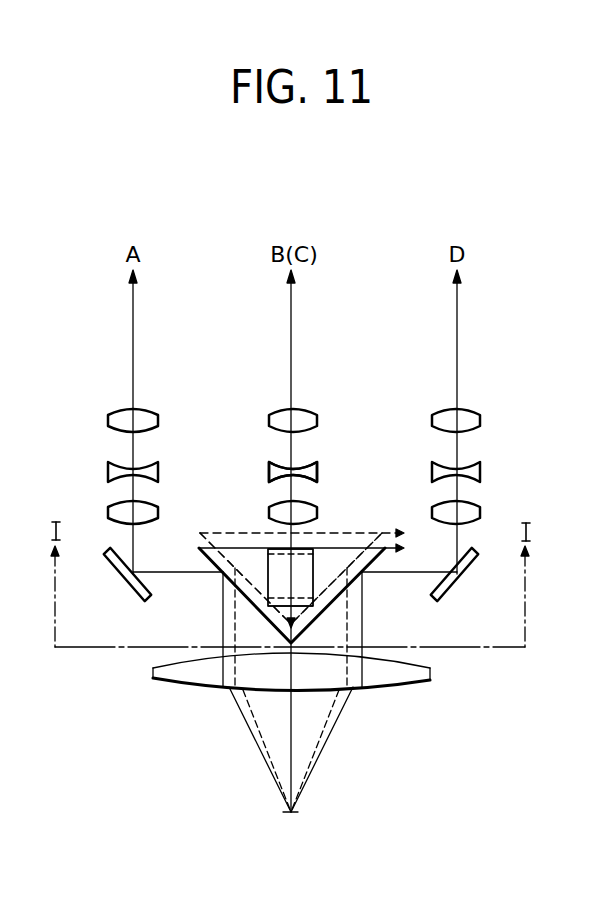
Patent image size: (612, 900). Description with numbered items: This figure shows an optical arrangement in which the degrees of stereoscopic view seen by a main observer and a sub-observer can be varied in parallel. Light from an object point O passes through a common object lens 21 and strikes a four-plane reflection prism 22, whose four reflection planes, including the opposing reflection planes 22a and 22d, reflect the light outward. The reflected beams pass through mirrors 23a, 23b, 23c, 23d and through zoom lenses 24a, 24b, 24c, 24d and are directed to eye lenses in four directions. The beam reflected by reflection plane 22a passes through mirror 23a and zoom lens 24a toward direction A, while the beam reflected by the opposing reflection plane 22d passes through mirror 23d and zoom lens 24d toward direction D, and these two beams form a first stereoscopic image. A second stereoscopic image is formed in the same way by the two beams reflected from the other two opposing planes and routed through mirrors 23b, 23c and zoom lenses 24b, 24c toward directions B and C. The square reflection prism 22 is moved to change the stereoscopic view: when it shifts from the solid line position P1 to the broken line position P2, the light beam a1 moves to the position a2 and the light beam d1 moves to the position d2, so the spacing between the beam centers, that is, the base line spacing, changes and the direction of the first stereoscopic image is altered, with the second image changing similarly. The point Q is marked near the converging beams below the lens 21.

The common object lens 21 is at (170, 674).
The four-plane reflection prism 22 is at (228, 535).
The reflection plane 22a is at (283, 613).
The reflection plane 22d is at (299, 613).
The mirror 23a is at (126, 584).
The mirror 23b is at (305, 582).
The mirror 23c is at (344, 589).
The mirror 23d is at (466, 580).
The zoom lens 24a is at (101, 410).
The zoom lens 24b is at (261, 412).
The zoom lens 24c is at (254, 482).
The zoom lens 24d is at (423, 412).
The light beam a1 is at (223, 628).
The light beam position a2 is at (235, 592).
The light beam d1 is at (362, 628).
The light beam position d2 is at (347, 632).
The solid line position P1 is at (412, 557).
The broken line position P2 is at (412, 536).
The point Q is at (290, 751).
The object point O is at (293, 813).